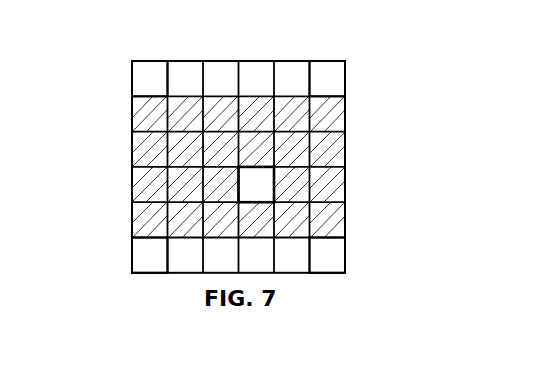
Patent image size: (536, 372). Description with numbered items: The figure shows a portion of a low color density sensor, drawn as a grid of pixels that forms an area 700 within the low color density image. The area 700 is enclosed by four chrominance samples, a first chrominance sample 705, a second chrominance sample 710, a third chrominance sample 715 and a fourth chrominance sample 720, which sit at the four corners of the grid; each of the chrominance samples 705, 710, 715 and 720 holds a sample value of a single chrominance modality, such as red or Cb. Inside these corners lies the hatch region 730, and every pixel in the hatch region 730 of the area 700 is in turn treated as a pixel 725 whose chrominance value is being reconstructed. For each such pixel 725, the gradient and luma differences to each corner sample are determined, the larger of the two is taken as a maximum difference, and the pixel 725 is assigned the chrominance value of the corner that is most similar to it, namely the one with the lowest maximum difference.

The area 700 is at (263, 61).
The chrominance sample P1 705 is at (132, 61).
The chrominance sample P2 710 is at (345, 61).
The chrominance sample P3 715 is at (132, 258).
The chrominance sample P4 720 is at (345, 255).
The pixel Pr 725 is at (274, 167).
The hatch region 730 is at (132, 150).